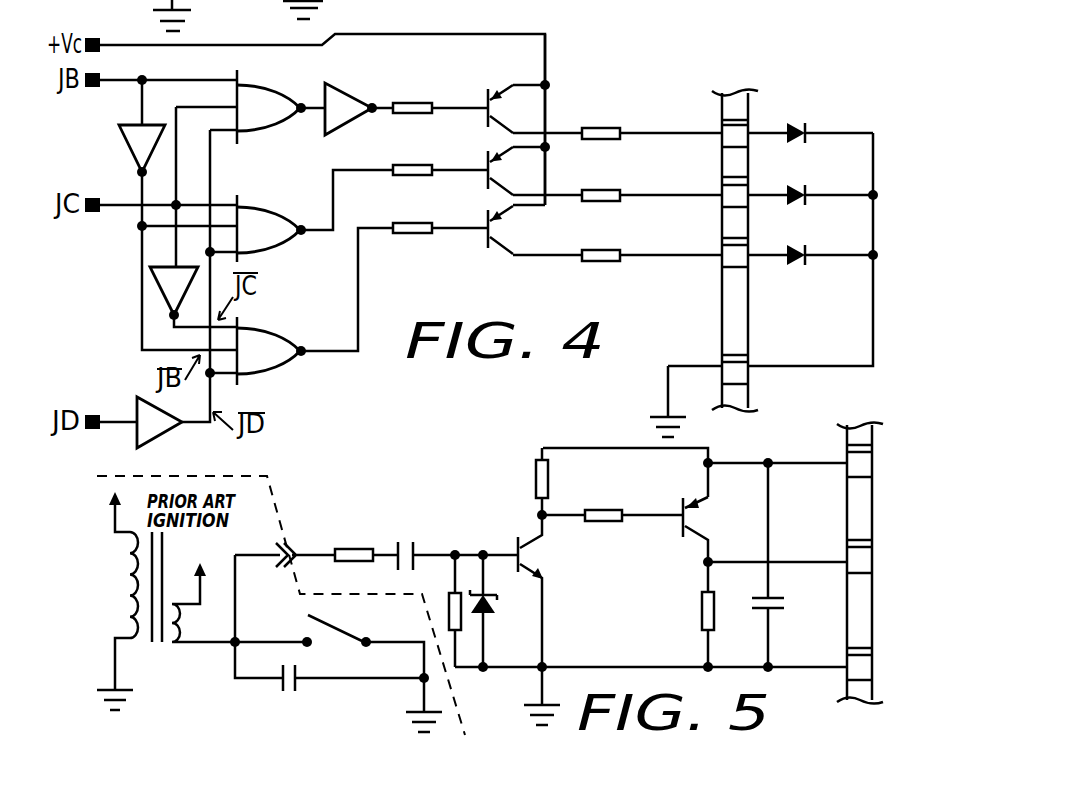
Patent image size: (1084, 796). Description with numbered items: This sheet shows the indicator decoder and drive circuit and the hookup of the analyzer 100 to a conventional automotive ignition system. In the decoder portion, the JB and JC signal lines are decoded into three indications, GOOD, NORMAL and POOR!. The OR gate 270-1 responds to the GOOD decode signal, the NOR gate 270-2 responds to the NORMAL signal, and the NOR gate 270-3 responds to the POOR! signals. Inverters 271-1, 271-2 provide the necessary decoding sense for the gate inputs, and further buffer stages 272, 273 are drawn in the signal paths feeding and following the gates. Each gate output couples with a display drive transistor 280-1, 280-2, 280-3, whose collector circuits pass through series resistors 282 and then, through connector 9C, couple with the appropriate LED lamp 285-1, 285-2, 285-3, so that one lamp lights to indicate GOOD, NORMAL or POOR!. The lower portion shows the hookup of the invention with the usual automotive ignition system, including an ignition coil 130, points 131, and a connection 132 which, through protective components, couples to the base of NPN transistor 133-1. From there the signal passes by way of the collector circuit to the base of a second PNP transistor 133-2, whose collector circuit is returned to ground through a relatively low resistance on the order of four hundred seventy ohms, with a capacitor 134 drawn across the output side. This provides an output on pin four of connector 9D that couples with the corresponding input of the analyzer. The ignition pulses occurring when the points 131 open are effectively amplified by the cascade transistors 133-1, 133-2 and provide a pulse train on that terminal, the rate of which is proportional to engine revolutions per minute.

In FIG. 4, the electronic ignition analyzer circuit connection 100 is at (554, 72).
In FIG. 5, the electronic ignition analyzer circuit connection 100 is at (580, 447).
In FIG. 4, the OR gate 270-1 is at (285, 93).
In FIG. 4, the NOR gate 270-2 is at (298, 190).
In FIG. 4, the NOR gate 270-3 is at (303, 312).
In FIG. 4, the inverter 271-1 is at (125, 144).
In FIG. 4, the inverter 271-2 is at (166, 282).
In FIG. 4, the buffer amplifier 272 is at (135, 405).
In FIG. 4, the buffer amplifier 273 is at (355, 110).
In FIG. 4, the display drive transistor 280-1 is at (481, 96).
In FIG. 4, the display drive transistor 280-2 is at (481, 164).
In FIG. 4, the display drive transistor 280-3 is at (483, 249).
In FIG. 4, the current limiting resistor 282 is at (641, 115).
In FIG. 4, the connector 9C is at (767, 96).
In FIG. 5, the connector 9D is at (881, 480).
In FIG. 4, the LED lamp 285-1 is at (808, 128).
In FIG. 4, the LED lamp 285-2 is at (808, 190).
In FIG. 4, the LED lamp 285-3 is at (808, 250).
In FIG. 5, the ignition coil 130 is at (117, 602).
In FIG. 5, the points 131 is at (354, 617).
In FIG. 5, the connection 132 is at (293, 555).
In FIG. 5, the NPN transistor 133-1 is at (552, 550).
In FIG. 5, the PNP transistor 133-2 is at (675, 510).
In FIG. 5, the capacitor 134 is at (803, 560).